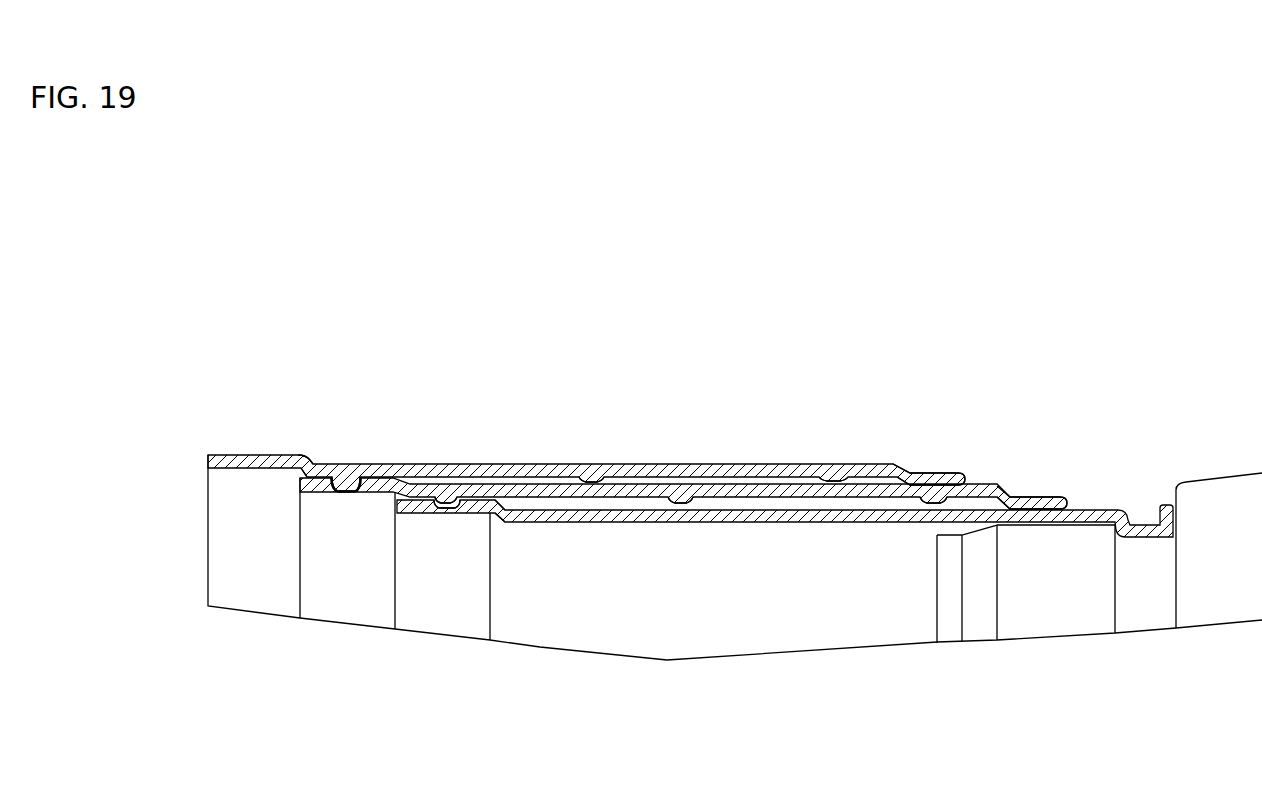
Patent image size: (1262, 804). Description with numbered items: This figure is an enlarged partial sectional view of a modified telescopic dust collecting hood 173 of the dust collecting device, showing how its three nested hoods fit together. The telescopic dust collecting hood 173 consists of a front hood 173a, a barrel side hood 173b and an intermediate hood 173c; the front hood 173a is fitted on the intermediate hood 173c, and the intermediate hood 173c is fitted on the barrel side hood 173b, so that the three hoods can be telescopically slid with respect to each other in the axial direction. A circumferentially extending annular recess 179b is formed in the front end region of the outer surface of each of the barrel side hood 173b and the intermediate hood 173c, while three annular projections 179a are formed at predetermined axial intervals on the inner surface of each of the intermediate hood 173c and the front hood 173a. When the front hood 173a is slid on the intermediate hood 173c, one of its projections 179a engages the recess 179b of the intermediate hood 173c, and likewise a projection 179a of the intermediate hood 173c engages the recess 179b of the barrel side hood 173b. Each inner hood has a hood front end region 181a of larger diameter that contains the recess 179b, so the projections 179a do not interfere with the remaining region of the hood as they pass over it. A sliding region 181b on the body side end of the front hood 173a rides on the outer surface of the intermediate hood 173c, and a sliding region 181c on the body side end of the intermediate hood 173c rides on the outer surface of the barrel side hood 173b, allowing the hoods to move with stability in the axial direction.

The telescopic dust collecting hood 173 is at (706, 453).
The front hood 173a is at (243, 458).
The barrel side hood 173b is at (794, 518).
The intermediate hood 173c is at (616, 497).
The annular projection 179a is at (344, 478).
The annular recess 179b is at (352, 491).
The hood front end region 181a is at (305, 478).
The sliding region 181b is at (938, 473).
The sliding region 181c is at (1030, 497).